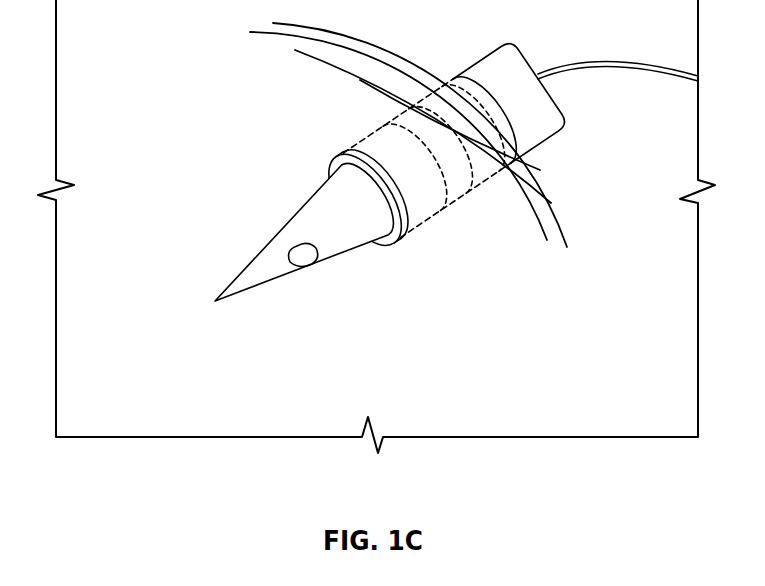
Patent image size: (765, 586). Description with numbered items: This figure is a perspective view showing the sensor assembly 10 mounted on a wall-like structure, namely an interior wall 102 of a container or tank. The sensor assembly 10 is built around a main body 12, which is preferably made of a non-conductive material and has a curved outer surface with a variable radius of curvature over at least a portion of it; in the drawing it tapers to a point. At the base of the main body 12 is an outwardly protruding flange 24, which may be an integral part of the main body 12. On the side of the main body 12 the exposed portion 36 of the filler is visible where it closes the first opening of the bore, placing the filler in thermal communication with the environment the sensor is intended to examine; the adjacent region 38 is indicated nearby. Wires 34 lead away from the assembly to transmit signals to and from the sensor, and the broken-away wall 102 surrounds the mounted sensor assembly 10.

The sensor assembly 10 is at (427, 172).
The main body 12 is at (317, 210).
The outwardly protruding flange 24 is at (337, 162).
The wires 34 is at (620, 58).
The exposed portion of the filler 36 is at (304, 262).
The surface region 38 is at (300, 288).
The interior wall 102 is at (531, 373).